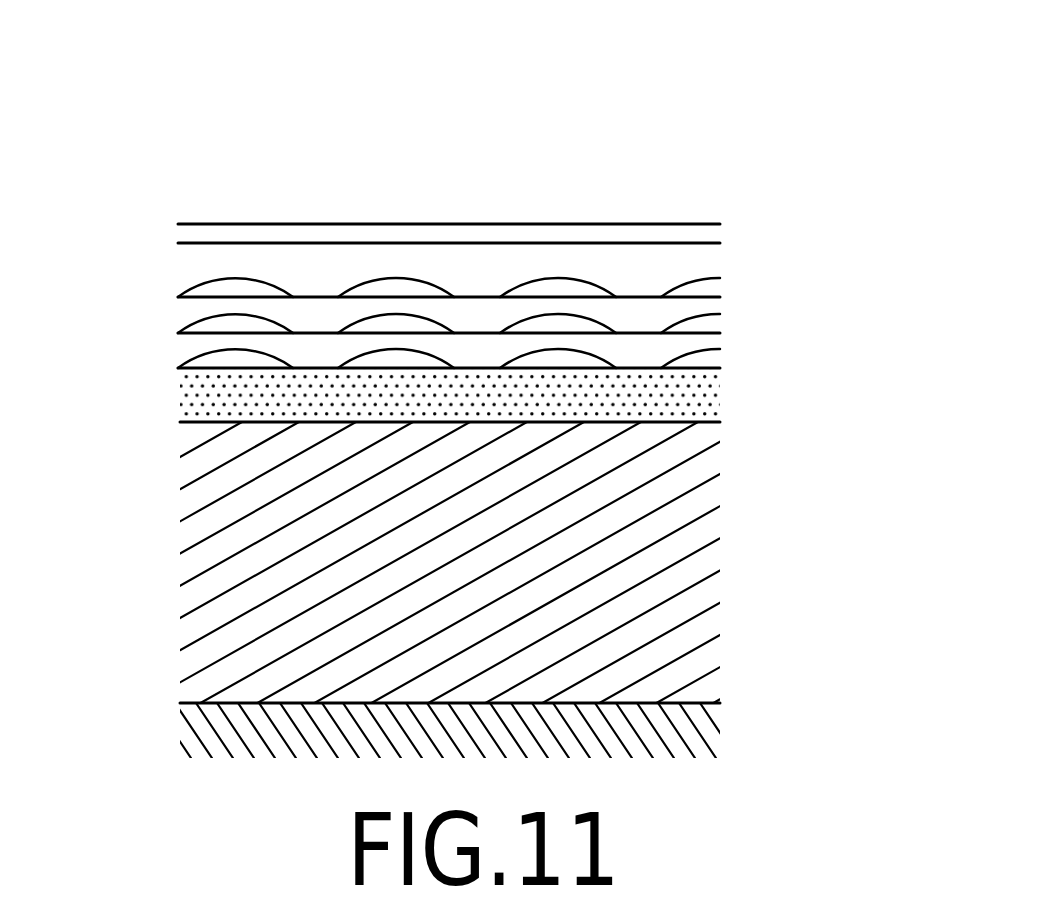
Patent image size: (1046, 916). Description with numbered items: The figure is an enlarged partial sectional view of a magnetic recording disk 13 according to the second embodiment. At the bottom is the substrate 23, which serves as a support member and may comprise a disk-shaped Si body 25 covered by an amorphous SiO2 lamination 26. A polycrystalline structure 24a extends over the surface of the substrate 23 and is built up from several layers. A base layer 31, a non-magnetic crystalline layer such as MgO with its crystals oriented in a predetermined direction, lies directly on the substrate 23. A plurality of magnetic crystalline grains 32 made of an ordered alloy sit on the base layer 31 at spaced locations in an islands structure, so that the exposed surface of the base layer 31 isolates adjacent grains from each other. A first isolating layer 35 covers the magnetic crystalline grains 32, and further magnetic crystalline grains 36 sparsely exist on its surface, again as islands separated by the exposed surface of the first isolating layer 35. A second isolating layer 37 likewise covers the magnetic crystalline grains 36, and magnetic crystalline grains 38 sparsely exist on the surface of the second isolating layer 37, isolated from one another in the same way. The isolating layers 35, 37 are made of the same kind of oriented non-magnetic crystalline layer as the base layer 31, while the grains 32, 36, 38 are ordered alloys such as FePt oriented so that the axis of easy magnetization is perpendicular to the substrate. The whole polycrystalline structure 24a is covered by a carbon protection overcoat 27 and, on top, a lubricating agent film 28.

The magnetic recording disk 13 is at (560, 110).
The substrate 23 is at (832, 415).
The polycrystalline structure 24a is at (158, 470).
The Si body 25 is at (705, 693).
The amorphous SiO2 lamination 26 is at (703, 412).
The carbon protection overcoat 27 is at (703, 243).
The lubricating agent film 28 is at (705, 222).
The base layer 31 is at (183, 368).
The magnetic crystalline grains 32 is at (348, 357).
The first isolating layer 35 is at (712, 333).
The magnetic crystalline grains 36 is at (392, 312).
The second isolating layer 37 is at (208, 298).
The magnetic crystalline grains 38 is at (228, 285).